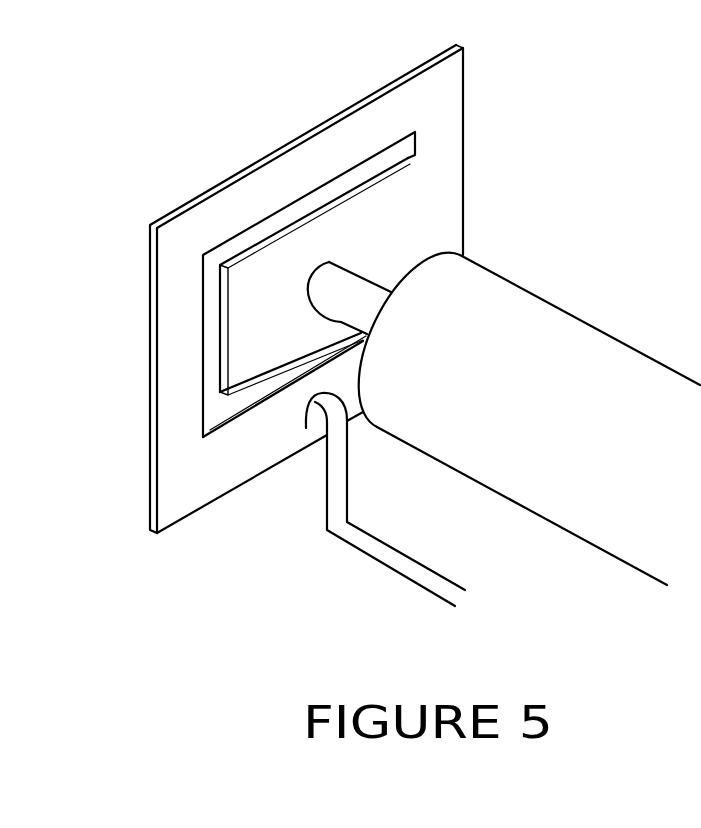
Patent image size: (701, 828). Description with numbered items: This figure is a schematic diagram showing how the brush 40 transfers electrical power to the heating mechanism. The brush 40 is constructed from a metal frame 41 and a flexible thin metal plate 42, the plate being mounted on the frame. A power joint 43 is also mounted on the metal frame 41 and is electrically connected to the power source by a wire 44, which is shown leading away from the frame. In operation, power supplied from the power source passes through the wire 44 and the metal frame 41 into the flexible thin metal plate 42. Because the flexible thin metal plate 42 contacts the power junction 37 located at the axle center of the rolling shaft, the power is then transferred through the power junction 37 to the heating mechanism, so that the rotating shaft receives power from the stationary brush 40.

The power junction 37 is at (350, 295).
The brush 40 is at (464, 198).
The metal frame 41 is at (217, 213).
The flexible thin metal plate 42 is at (243, 316).
The power joint 43 is at (310, 416).
The wire 44 is at (408, 563).